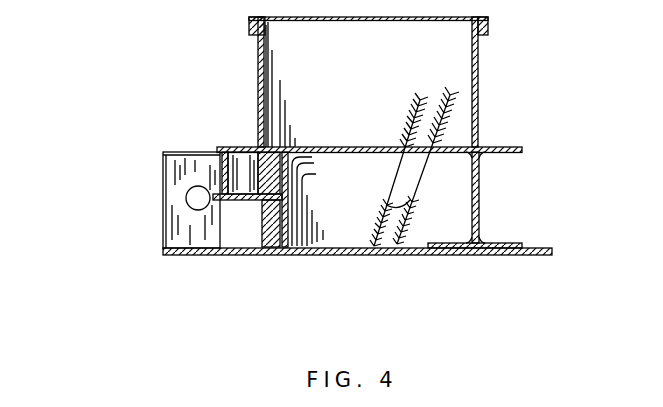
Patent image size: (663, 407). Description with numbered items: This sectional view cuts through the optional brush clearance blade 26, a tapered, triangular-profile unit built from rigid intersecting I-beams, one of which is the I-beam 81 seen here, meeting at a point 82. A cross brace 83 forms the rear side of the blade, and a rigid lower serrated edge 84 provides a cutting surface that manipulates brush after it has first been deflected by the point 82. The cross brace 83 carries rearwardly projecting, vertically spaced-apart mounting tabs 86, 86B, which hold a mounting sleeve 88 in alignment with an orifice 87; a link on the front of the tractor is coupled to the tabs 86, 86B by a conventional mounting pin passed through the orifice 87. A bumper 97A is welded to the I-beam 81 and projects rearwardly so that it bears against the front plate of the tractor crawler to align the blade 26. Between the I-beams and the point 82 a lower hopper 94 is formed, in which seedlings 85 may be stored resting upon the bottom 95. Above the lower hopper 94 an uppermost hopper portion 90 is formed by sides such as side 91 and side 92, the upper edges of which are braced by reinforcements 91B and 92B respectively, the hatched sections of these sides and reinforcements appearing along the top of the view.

The brush clearance blade 26 is at (118, 116).
The I-beam 81 is at (180, 170).
The point 82 is at (526, 242).
The cross brace 83 is at (289, 218).
The lower serrated edge 84 is at (500, 256).
The seedlings 85 is at (394, 198).
The mounting tab 86 is at (228, 150).
The mounting tab 86B is at (238, 200).
The orifice 87 is at (240, 147).
The mounting sleeve 88 is at (222, 175).
The uppermost hopper portion 90 is at (440, 78).
The side 91 is at (258, 70).
The reinforcement 91B is at (253, 27).
The side 92 is at (313, 63).
The reinforcement 92B is at (488, 27).
The lower hopper 94 is at (442, 168).
The bottom 95 is at (416, 248).
The bumper 97A is at (203, 192).